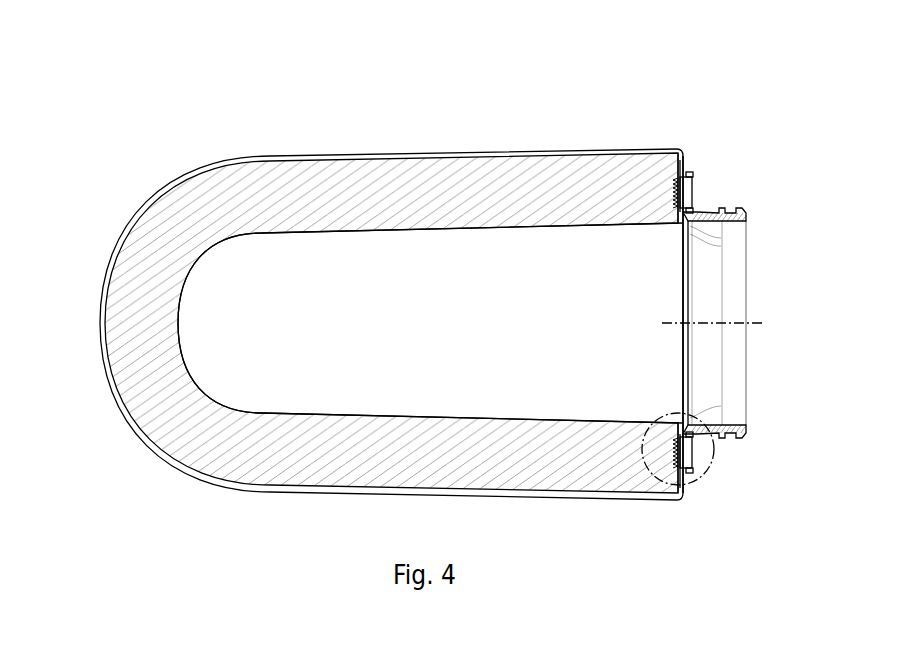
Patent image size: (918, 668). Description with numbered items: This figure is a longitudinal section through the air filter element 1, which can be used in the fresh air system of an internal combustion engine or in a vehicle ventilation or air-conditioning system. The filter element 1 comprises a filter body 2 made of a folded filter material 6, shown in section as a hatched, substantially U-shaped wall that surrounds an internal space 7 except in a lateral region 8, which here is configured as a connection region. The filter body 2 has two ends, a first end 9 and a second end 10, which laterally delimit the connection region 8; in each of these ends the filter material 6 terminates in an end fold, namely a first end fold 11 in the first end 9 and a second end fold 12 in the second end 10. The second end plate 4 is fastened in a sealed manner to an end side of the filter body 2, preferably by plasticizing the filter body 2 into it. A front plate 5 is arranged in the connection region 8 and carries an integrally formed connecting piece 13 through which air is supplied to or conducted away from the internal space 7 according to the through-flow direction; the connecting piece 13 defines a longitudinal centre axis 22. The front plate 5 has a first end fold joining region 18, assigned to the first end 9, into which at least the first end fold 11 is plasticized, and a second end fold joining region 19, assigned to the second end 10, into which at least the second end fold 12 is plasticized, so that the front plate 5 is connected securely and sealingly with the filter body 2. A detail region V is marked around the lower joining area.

The air filter element 1 is at (147, 132).
The filter body 2 is at (181, 325).
The second end plate 4 is at (272, 156).
The front plate 5 is at (711, 214).
The folded filter material 6 is at (351, 226).
The internal space 7 is at (434, 339).
The lateral region 8 is at (683, 347).
The first end 9 is at (671, 502).
The second end 10 is at (671, 160).
The first end fold 11 is at (684, 475).
The second end fold 12 is at (683, 162).
The connecting piece 13 is at (746, 214).
The first end fold joining region 18 is at (691, 458).
The second end fold joining region 19 is at (693, 191).
The longitudinal centre axis 22 is at (758, 320).
The detail region V is at (713, 445).